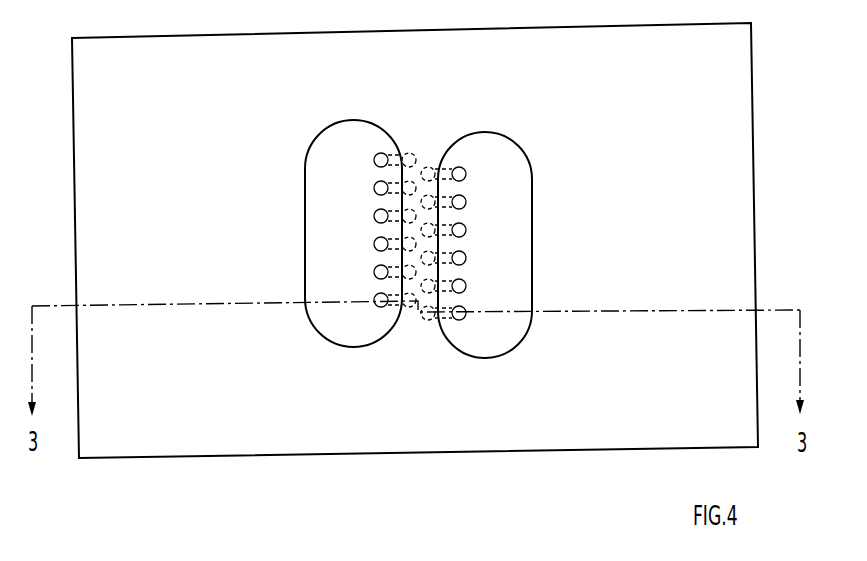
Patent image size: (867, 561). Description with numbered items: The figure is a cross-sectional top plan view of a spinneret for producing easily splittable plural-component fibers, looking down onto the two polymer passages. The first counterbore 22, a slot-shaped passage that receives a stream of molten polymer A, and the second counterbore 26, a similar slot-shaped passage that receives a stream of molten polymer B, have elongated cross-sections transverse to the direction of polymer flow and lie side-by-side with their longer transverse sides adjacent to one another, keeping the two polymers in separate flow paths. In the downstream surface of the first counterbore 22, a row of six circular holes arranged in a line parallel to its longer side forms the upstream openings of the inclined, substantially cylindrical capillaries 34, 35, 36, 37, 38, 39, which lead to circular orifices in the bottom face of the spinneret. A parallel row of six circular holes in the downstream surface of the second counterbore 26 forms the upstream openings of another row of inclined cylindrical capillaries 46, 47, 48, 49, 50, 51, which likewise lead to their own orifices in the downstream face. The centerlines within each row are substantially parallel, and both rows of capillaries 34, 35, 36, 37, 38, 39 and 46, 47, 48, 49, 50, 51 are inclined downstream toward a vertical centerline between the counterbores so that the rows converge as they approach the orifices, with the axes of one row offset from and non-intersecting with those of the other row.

The first counterbore 22 is at (356, 128).
The second counterbore 26 is at (505, 333).
The capillary 34 is at (397, 162).
The capillary 35 is at (394, 186).
The capillary 36 is at (394, 216).
The capillary 37 is at (394, 246).
The capillary 38 is at (393, 274).
The capillary 39 is at (373, 293).
The capillary 46 is at (448, 168).
The capillary 47 is at (449, 200).
The capillary 48 is at (450, 222).
The capillary 49 is at (449, 250).
The capillary 50 is at (450, 278).
The capillary 51 is at (456, 321).